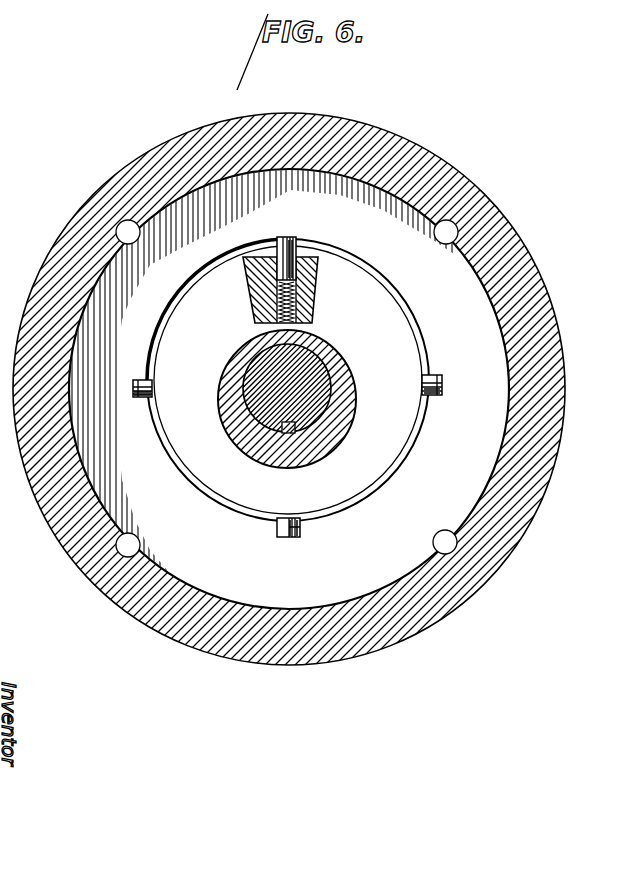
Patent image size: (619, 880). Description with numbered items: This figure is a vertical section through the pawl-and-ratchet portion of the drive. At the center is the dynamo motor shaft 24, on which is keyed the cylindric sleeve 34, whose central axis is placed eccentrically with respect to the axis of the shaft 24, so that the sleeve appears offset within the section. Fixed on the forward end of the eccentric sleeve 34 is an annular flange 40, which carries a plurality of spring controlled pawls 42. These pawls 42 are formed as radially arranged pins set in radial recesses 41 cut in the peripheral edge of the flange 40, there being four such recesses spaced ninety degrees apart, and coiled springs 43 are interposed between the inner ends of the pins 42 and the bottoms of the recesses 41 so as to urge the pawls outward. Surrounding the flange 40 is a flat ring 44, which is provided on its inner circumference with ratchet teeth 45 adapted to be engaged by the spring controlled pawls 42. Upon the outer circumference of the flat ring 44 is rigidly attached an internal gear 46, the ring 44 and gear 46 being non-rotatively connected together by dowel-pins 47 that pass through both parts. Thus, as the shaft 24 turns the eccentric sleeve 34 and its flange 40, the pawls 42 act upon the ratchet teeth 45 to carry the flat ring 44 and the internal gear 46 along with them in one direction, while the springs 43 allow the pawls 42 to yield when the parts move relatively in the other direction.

The shaft 24 is at (267, 408).
The cylindric sleeve 34 is at (334, 428).
The annular flange 40 is at (413, 343).
The radial recesses 41 is at (306, 303).
The spring controlled pawls 42 is at (278, 246).
The coiled springs 43 is at (257, 302).
The flat ring 44 is at (269, 577).
The ratchet teeth 45 is at (298, 246).
The internal gear 46 is at (68, 262).
The dowel-pins 47 is at (124, 230).